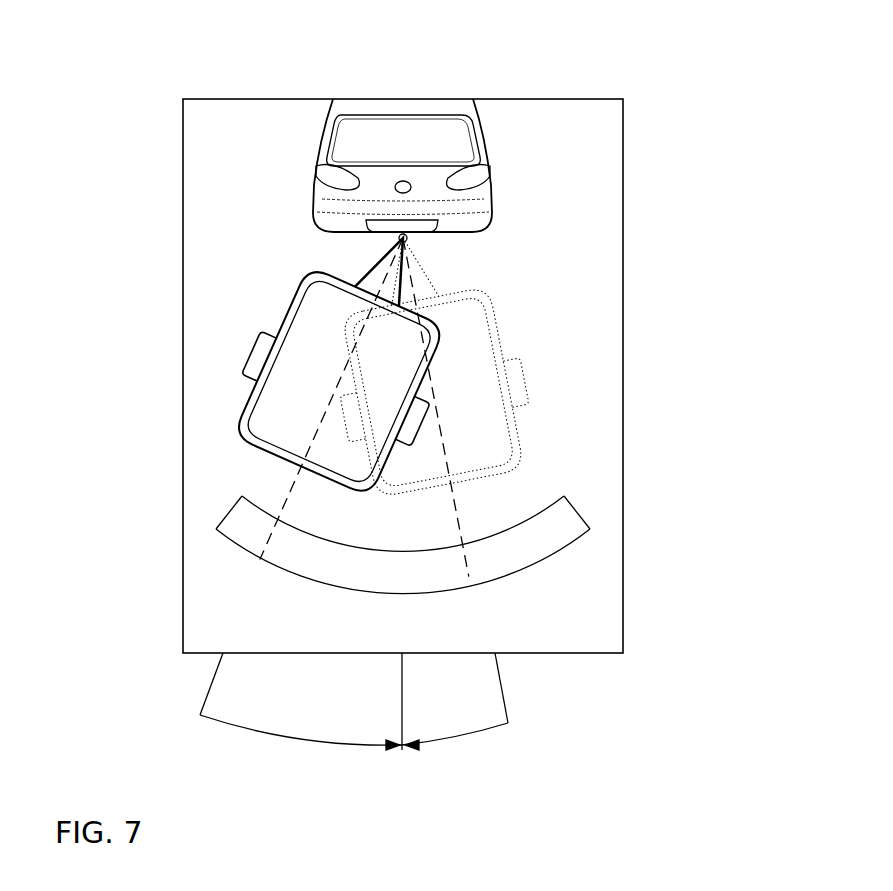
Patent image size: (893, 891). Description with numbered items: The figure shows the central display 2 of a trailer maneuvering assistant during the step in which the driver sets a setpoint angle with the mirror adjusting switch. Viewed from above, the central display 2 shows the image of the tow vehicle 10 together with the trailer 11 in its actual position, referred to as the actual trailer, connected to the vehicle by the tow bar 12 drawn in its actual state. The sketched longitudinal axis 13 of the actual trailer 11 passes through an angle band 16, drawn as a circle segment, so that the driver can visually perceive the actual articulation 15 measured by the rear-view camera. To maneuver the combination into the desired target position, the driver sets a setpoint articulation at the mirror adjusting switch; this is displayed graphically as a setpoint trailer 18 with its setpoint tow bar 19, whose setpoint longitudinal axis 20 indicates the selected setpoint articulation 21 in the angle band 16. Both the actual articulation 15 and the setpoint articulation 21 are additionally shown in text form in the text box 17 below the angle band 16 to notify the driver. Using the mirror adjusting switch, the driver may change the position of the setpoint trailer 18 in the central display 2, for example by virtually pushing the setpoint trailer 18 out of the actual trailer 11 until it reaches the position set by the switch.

The central display 2 is at (623, 290).
The tow vehicle 10 is at (440, 105).
The trailer 11 is at (268, 400).
The tow bar 12 is at (376, 265).
The longitudinal axis of trailer 13 is at (290, 497).
The actual articulation 15 is at (301, 701).
The angle band 16 is at (565, 547).
The text box 17 is at (182, 620).
The setpoint trailer 18 is at (518, 430).
The setpoint tow bar 19 is at (423, 265).
The setpoint longitudinal axis 20 is at (465, 512).
The setpoint articulation 21 is at (455, 701).